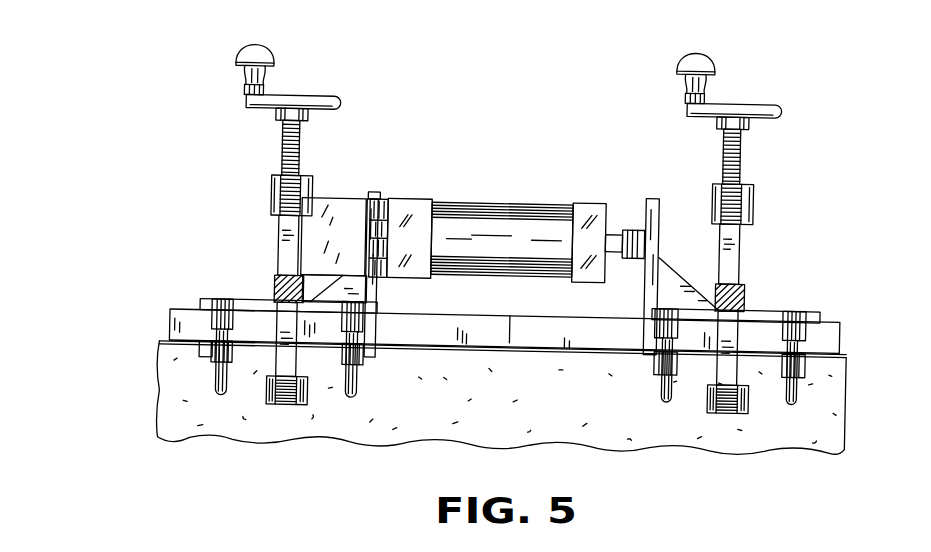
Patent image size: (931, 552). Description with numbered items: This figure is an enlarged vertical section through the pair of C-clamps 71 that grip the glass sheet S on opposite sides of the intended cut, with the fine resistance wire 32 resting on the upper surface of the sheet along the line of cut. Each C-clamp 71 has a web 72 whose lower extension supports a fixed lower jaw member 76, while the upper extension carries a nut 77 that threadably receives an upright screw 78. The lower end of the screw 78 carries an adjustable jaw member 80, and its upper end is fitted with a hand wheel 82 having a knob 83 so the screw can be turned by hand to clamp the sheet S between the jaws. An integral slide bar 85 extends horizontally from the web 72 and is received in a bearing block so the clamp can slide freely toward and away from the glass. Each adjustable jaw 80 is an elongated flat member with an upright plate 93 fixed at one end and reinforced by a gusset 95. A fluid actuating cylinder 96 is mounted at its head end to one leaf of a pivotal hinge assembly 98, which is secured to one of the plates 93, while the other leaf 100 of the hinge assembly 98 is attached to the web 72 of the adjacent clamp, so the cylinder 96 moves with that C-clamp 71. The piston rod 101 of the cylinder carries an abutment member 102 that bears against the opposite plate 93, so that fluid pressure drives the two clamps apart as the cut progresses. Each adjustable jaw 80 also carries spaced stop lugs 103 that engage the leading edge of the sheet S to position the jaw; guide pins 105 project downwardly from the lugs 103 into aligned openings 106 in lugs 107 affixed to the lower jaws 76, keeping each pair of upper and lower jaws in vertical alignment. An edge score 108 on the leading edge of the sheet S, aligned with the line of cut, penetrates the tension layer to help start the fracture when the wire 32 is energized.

The wire 32 is at (512, 308).
The C-clamp 71 is at (265, 226).
The web 72 is at (286, 240).
The lower jaw member 76 is at (319, 362).
The nut 77 is at (270, 193).
The screw 78 is at (284, 146).
The adjustable jaw member 80 is at (242, 298).
The hand wheel 82 is at (328, 90).
The knob 83 is at (233, 48).
The slide bar 85 is at (282, 286).
The upright plate 93 is at (380, 293).
The gusset 95 is at (680, 277).
The fluid actuating cylinder 96 is at (461, 216).
The hinge assembly 98 is at (390, 186).
The leaf 100 is at (341, 198).
The piston rod 101 is at (616, 224).
The abutment member 102 is at (630, 221).
The stop lug 103 is at (221, 305).
The guide pin 105 is at (221, 334).
The opening 106 is at (219, 369).
The lug 107 is at (236, 364).
The edge score 108 is at (509, 338).
The glass sheet S is at (553, 332).